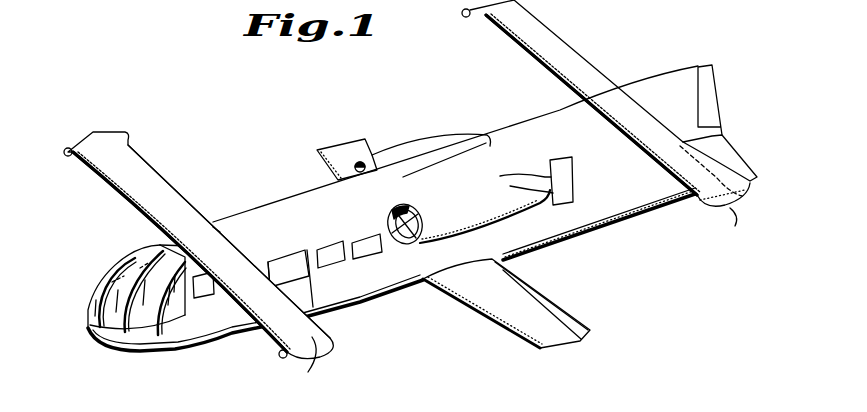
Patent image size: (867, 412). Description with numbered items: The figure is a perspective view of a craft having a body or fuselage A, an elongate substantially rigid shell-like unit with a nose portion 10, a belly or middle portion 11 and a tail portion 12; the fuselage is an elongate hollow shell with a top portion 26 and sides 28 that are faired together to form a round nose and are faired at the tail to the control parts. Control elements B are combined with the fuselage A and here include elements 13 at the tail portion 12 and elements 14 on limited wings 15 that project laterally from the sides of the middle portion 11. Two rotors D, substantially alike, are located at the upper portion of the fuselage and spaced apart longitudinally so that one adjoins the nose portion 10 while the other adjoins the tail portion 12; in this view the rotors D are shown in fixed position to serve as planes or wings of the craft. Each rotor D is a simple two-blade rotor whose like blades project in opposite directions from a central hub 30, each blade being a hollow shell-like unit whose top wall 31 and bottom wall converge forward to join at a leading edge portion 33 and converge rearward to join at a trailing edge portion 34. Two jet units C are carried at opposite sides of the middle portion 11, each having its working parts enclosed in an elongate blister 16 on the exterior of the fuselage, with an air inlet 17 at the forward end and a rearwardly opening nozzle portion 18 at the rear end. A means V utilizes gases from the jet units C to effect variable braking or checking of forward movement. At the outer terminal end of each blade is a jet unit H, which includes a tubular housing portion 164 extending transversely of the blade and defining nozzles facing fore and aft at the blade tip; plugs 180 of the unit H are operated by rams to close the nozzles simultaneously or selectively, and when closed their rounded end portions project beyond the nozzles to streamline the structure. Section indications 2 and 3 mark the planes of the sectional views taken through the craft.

The nose portion 10 is at (158, 330).
The belly or middle portion 11 is at (400, 284).
The tail portion 12 is at (673, 198).
The control elements at the tail 13 is at (724, 129).
The control elements on wings 14 is at (523, 274).
The limited wings 15 is at (488, 306).
The blister 16 is at (88, 133).
The air inlet 17 is at (413, 241).
The nozzle portion 18 is at (537, 174).
The top portion 26 is at (292, 208).
The sides 28 is at (347, 288).
The hub 30 is at (226, 242).
The top wall 31 is at (540, 30).
The leading edge portion 33 is at (512, 48).
The trailing edge portion 34 is at (182, 190).
The tubular housing portion 164 is at (750, 199).
The plug 180 is at (278, 366).
The fuselage A is at (268, 210).
The control elements B is at (576, 321).
The jet unit C is at (404, 140).
The rotor D is at (163, 161).
The jet unit at blade end H is at (509, 303).
The braking means V is at (566, 190).
The section line 2- 2 is at (355, 102).
The section line 3- 3 is at (85, 324).